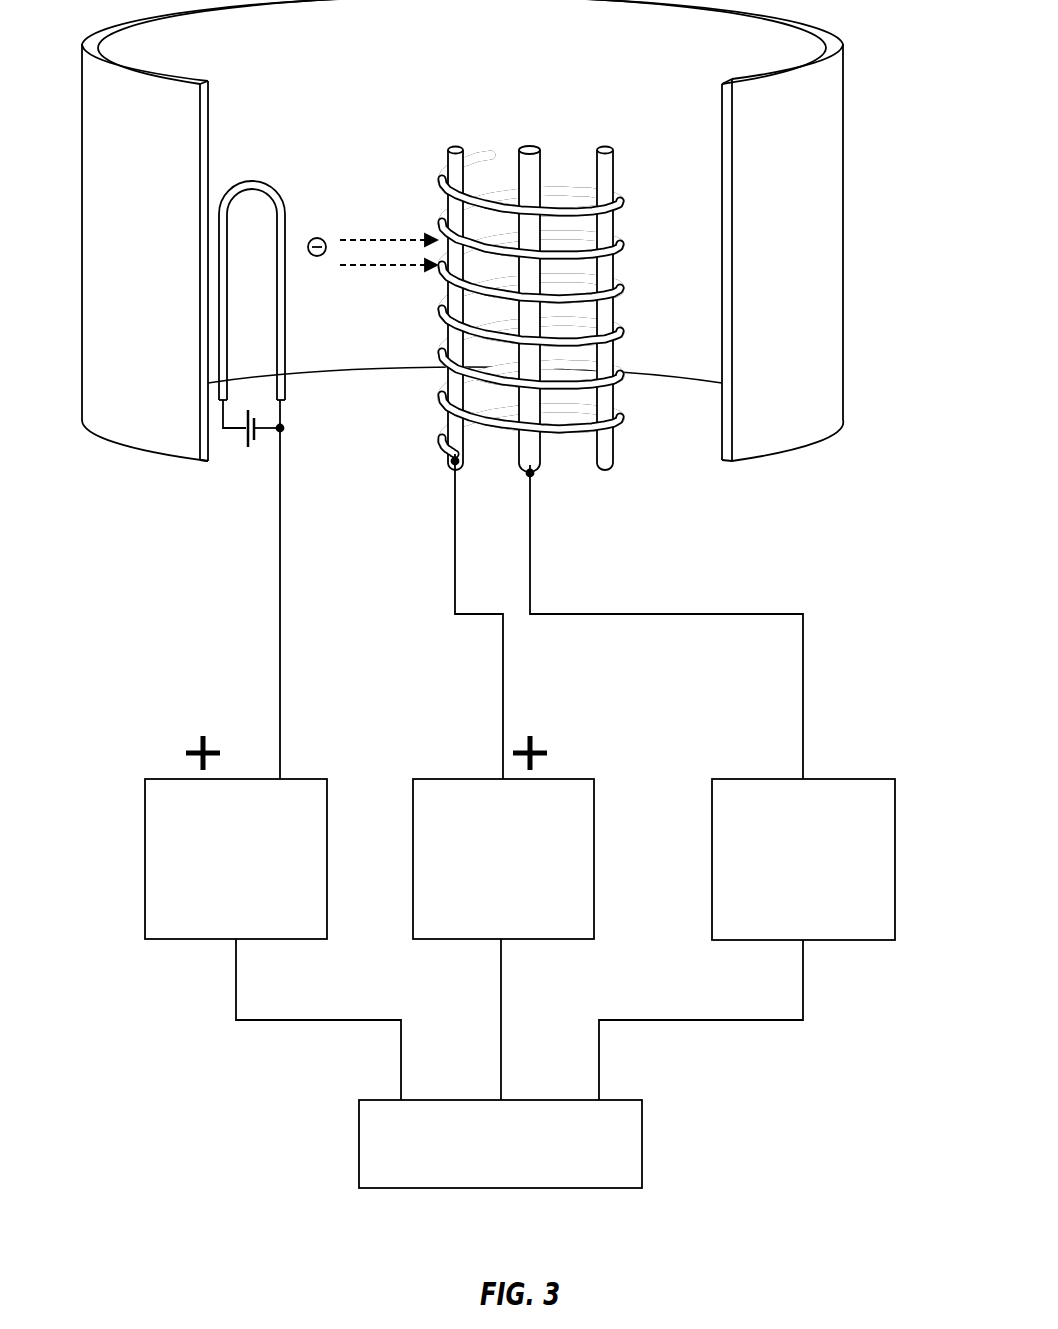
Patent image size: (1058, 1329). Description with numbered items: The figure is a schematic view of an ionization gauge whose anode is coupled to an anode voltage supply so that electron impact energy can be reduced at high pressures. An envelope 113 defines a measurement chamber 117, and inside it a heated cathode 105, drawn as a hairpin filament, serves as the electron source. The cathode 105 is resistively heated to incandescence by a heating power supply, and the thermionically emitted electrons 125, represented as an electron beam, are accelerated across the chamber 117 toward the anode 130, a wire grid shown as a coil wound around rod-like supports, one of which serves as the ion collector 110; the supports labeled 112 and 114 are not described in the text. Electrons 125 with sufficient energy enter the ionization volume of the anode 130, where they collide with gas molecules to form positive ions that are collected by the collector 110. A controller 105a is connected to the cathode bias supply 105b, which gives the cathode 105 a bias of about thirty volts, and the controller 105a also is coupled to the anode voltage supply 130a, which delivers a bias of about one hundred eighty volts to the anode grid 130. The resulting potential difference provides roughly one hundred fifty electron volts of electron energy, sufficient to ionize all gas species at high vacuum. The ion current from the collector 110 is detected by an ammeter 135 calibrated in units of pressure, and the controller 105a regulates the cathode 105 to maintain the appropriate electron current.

The cathode 105 is at (220, 313).
The controller 105a is at (359, 1145).
The cathode bias supply 105b is at (183, 779).
The ion collector 110 is at (530, 147).
The anode post 112 is at (455, 147).
The anode post 114 is at (605, 147).
The envelope 113 is at (828, 232).
The measurement chamber 117 is at (382, 418).
The electrons 125 is at (386, 238).
The anode 130 is at (546, 291).
The anode voltage supply 130a is at (457, 779).
The ammeter 135 is at (736, 779).